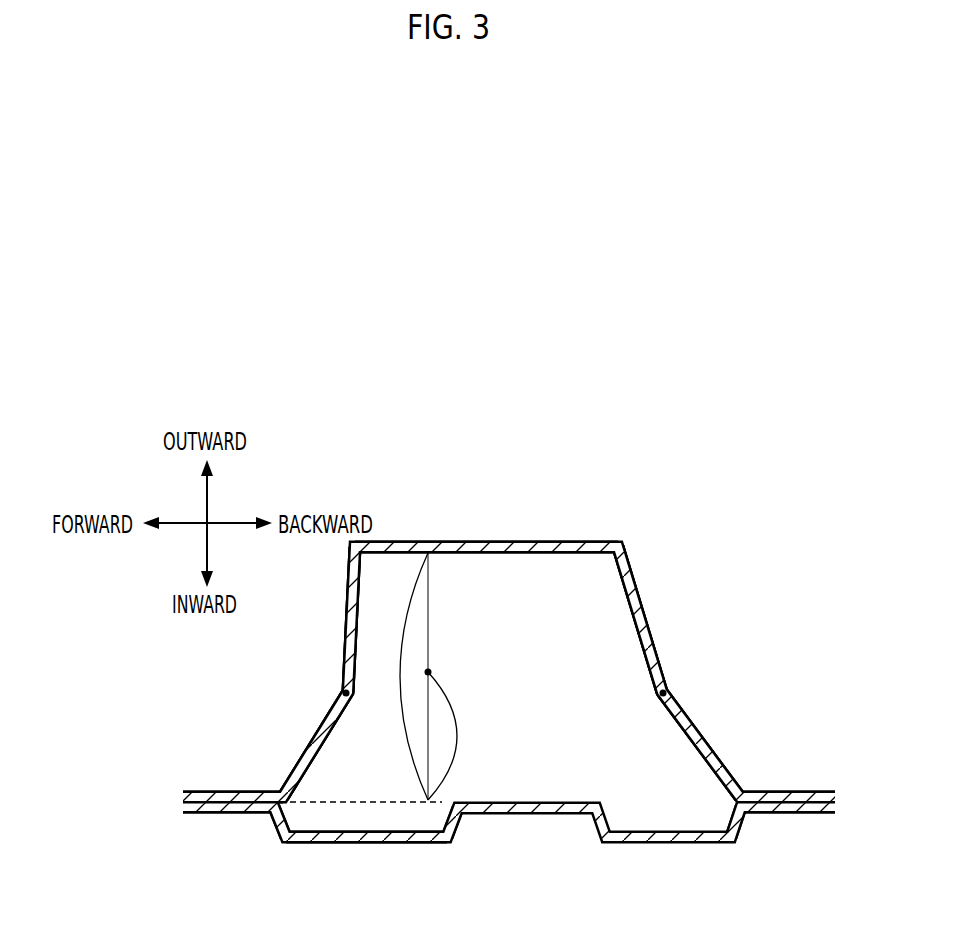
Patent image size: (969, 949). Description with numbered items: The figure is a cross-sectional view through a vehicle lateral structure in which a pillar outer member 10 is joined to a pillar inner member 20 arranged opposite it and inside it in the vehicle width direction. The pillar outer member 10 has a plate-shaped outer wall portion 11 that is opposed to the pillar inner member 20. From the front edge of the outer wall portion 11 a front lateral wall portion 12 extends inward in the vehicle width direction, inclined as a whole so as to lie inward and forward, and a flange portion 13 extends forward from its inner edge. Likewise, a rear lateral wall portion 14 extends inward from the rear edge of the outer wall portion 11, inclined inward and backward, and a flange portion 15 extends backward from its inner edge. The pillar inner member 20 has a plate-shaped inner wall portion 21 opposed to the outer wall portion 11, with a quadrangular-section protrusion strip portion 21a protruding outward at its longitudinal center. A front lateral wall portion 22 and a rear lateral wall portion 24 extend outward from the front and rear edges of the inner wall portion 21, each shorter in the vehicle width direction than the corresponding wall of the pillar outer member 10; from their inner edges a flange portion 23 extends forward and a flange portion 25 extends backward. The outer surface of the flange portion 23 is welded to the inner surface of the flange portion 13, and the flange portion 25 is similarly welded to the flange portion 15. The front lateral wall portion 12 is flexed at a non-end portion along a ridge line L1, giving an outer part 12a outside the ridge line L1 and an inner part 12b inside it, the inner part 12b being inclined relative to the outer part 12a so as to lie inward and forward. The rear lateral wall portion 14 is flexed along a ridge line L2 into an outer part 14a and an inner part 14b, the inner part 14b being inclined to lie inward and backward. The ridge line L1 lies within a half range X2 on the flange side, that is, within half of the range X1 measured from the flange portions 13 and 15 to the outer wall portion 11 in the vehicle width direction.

The pillar outer member 10 is at (650, 521).
The outer wall portion 11 is at (530, 541).
The front lateral wall portion 12 is at (240, 638).
The outer part 12a is at (342, 630).
The inner part 12b is at (307, 741).
The flange portion 13 is at (198, 791).
The rear lateral wall portion 14 is at (770, 625).
The outer part 14a is at (654, 630).
The inner part 14b is at (711, 739).
The flange portion 15 is at (805, 791).
The pillar inner member 20 is at (659, 860).
The inner wall portion 21 is at (390, 844).
The protrusion strip portion 21a is at (463, 816).
The front lateral wall portion 22 is at (277, 826).
The flange portion 23 is at (202, 814).
The rear lateral wall portion 24 is at (741, 821).
The flange portion 25 is at (805, 814).
The ridge line L1 is at (346, 698).
The ridge line L2 is at (660, 697).
The range X1 is at (361, 677).
The half range X2 is at (450, 736).